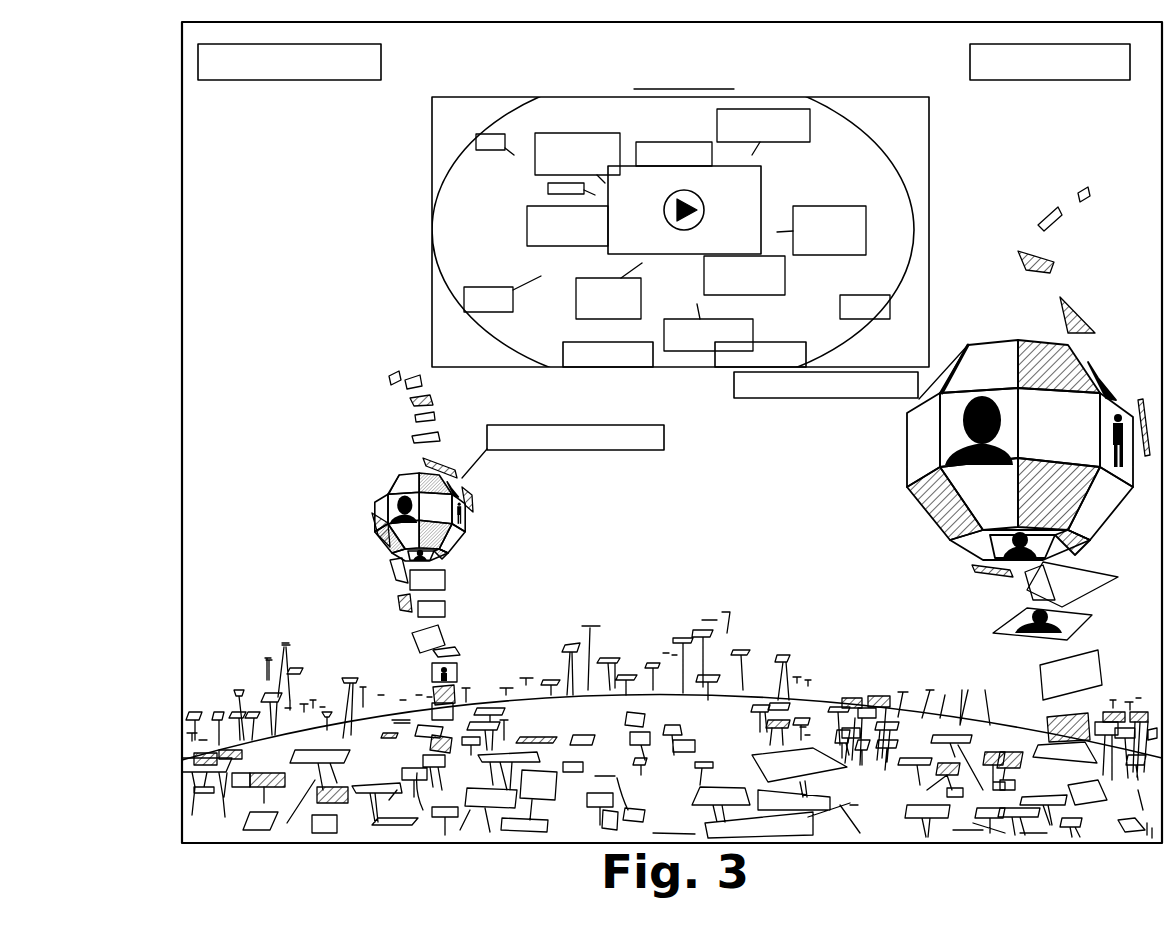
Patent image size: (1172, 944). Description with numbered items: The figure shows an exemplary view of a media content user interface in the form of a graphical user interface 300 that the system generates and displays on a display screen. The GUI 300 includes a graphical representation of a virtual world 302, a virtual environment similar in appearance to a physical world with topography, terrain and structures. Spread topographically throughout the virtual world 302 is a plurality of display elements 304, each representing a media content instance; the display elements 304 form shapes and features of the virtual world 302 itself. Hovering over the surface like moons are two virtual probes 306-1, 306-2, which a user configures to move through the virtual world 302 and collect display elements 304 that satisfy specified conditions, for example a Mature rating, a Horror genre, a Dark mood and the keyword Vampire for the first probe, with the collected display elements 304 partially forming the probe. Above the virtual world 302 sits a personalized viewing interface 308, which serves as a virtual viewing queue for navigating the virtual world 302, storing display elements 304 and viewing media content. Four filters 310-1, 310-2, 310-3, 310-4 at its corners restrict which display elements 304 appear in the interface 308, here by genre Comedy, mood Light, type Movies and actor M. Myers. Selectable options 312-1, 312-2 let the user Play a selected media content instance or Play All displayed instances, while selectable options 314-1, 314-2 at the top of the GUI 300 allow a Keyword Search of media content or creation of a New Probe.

The graphical user interface 300 is at (182, 113).
The virtual world 302 is at (278, 393).
The display elements 304 is at (928, 518).
The virtual probe 306-1 is at (1018, 340).
The virtual probe 306-2 is at (410, 472).
The personalized viewing interface 308 is at (600, 97).
The filter 310-1 is at (432, 125).
The filter 310-2 is at (932, 128).
The filter 310-3 is at (432, 335).
The filter 310-4 is at (930, 327).
The selectable option 312-1 is at (605, 367).
The selectable option 312-2 is at (728, 367).
The selectable option 314-1 is at (296, 80).
The selectable option 314-2 is at (1068, 80).